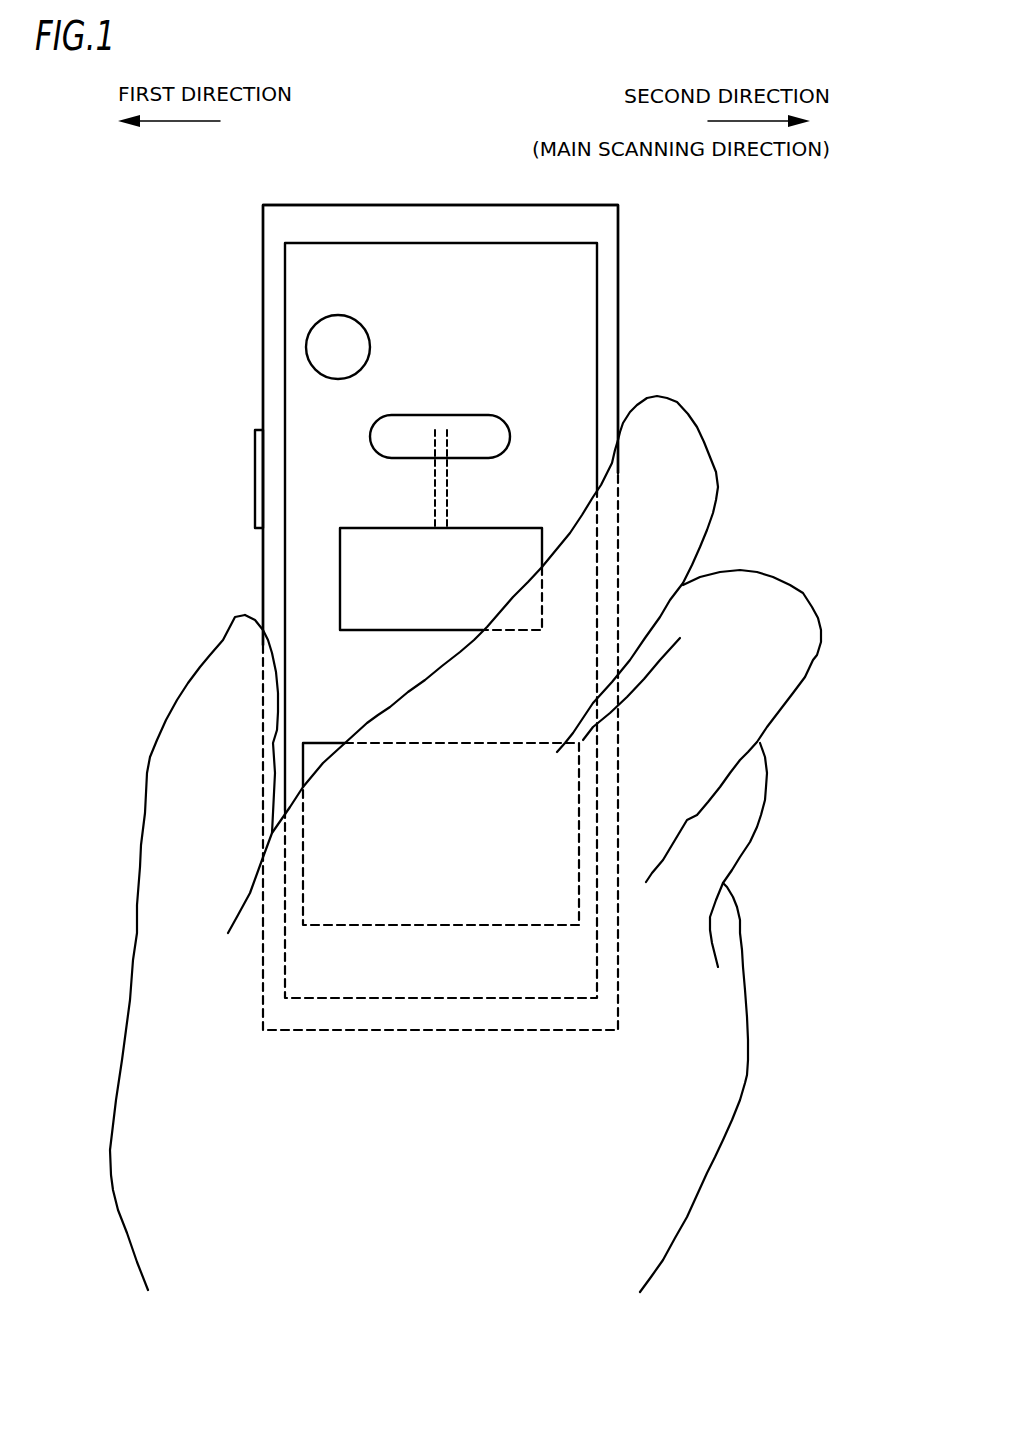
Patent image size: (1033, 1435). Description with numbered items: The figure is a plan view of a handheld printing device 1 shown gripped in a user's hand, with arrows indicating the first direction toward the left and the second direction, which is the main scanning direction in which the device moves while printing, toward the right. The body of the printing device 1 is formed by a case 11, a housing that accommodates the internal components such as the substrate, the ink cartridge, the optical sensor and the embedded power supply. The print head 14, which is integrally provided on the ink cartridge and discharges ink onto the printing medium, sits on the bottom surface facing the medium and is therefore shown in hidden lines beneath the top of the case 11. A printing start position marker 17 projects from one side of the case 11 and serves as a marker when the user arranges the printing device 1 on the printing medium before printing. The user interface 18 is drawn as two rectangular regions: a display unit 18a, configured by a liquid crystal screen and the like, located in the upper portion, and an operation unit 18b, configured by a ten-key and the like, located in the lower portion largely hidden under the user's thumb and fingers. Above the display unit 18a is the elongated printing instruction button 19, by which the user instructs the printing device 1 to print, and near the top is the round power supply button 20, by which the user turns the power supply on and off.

The printing device 1 is at (700, 262).
The case 11 is at (618, 270).
The print head 14 is at (435, 488).
The printing start position marker 17 is at (255, 478).
The user interface 18 is at (503, 726).
The display unit 18a is at (400, 577).
The operation unit 18b is at (579, 808).
The printing instruction button 19 is at (477, 438).
The power supply button 20 is at (338, 347).